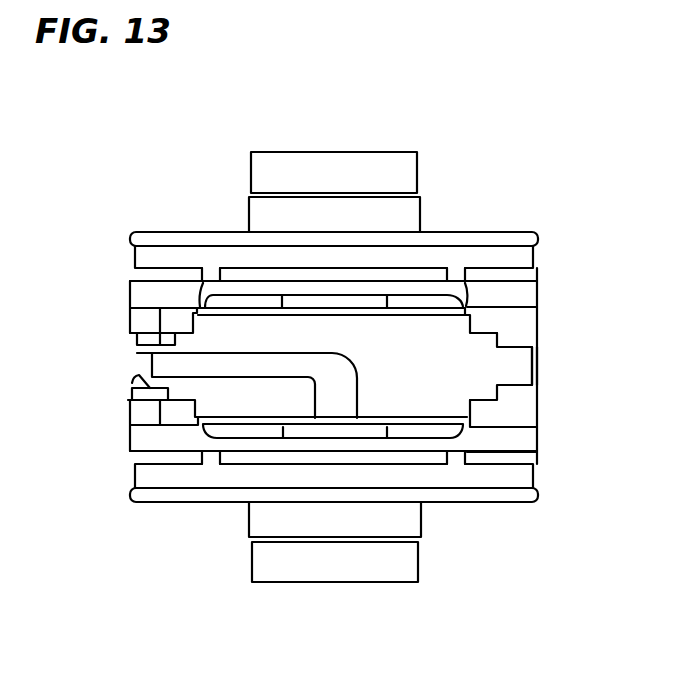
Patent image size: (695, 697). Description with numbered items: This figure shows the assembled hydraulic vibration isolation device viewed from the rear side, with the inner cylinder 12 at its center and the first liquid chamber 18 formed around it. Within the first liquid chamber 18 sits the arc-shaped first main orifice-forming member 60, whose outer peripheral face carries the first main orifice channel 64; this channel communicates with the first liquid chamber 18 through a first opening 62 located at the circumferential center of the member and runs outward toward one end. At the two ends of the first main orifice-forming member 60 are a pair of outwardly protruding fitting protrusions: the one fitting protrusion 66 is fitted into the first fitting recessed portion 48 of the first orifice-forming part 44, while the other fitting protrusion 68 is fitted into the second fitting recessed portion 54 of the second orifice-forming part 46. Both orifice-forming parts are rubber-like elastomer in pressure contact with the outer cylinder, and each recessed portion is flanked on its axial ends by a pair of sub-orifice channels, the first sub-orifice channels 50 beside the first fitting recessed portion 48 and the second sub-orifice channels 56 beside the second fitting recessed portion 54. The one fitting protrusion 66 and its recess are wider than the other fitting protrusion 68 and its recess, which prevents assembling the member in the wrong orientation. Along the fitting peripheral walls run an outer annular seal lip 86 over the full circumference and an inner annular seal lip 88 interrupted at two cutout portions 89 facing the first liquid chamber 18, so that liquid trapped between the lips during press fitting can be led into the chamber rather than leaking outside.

The inner cylinder 12 is at (388, 171).
The first liquid chamber 18 is at (332, 303).
The first orifice-forming part 44 is at (143, 298).
The second orifice-forming part 46 is at (528, 298).
The first fitting recessed portion 48 is at (178, 418).
The first sub-orifice channels 50 is at (173, 321).
The second fitting recessed portion 54 is at (518, 374).
The second sub-orifice channels 56 is at (515, 318).
The first main orifice-forming member 60 is at (407, 337).
The first opening 62 is at (338, 420).
The first main orifice channel 64 is at (296, 382).
The one fitting protrusion 66 is at (137, 349).
The other fitting protrusion 68 is at (518, 362).
The outer annular seal lip 86 is at (530, 238).
The inner annular seal lip 88 is at (536, 272).
The cutout portions 89 is at (211, 278).